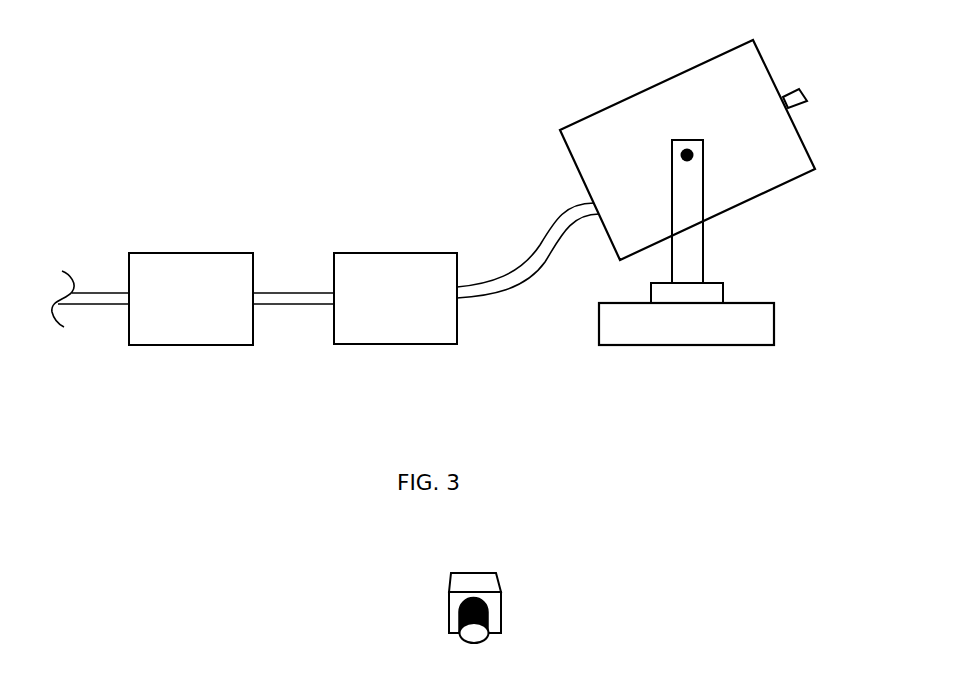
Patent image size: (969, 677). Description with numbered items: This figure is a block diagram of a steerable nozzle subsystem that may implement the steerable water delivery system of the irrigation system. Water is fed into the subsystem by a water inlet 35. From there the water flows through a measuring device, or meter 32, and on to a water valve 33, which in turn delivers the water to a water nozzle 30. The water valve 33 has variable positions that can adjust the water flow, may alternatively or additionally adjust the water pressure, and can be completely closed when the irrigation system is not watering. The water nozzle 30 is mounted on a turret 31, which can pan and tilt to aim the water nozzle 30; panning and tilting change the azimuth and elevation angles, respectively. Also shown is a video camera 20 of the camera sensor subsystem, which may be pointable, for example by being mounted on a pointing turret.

The video camera 20 is at (449, 603).
The water nozzle 30 is at (594, 114).
The turret 31 is at (692, 345).
The measuring device (meter) 32 is at (202, 345).
The water valve 33 is at (385, 344).
The water inlet 35 is at (91, 307).